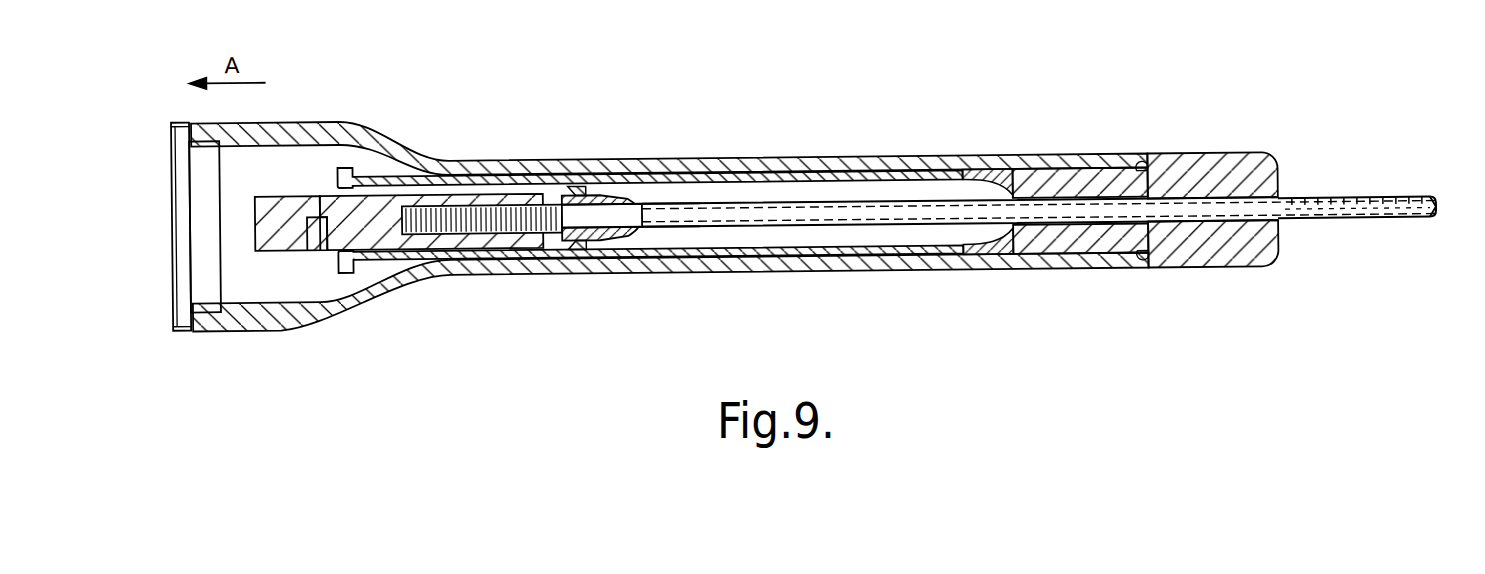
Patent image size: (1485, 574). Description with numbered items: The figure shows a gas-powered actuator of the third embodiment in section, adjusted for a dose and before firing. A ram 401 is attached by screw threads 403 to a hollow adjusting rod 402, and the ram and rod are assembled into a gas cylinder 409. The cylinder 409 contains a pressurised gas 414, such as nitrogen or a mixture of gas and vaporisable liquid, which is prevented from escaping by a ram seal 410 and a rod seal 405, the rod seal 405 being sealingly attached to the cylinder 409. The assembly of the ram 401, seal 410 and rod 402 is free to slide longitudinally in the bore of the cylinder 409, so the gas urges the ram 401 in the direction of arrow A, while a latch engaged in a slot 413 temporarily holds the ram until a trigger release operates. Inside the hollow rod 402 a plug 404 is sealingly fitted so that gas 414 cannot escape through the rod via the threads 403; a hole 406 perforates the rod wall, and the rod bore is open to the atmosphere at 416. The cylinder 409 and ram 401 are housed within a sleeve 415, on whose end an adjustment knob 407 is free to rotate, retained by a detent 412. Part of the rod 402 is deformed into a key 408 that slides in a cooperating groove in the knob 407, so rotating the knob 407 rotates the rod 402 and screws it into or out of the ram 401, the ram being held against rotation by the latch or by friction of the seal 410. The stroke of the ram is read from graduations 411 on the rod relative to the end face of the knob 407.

The ram 401 is at (282, 230).
The hollow adjusting rod 402 is at (1316, 202).
The screw threads 403 is at (611, 189).
The plug 404 is at (667, 222).
The rod seal 405 is at (1010, 173).
The hole 406 is at (1160, 213).
The adjustment knob 407 is at (1262, 249).
The key 408 is at (1218, 211).
The gas cylinder 409 is at (880, 264).
The ram seal 410 is at (580, 248).
The graduations 411 is at (1378, 225).
The detent 412 is at (1117, 262).
The slot 413 is at (322, 241).
The pressurised gas 414 is at (755, 185).
The sleeve 415 is at (886, 159).
The opening to atmosphere 416 is at (1437, 220).